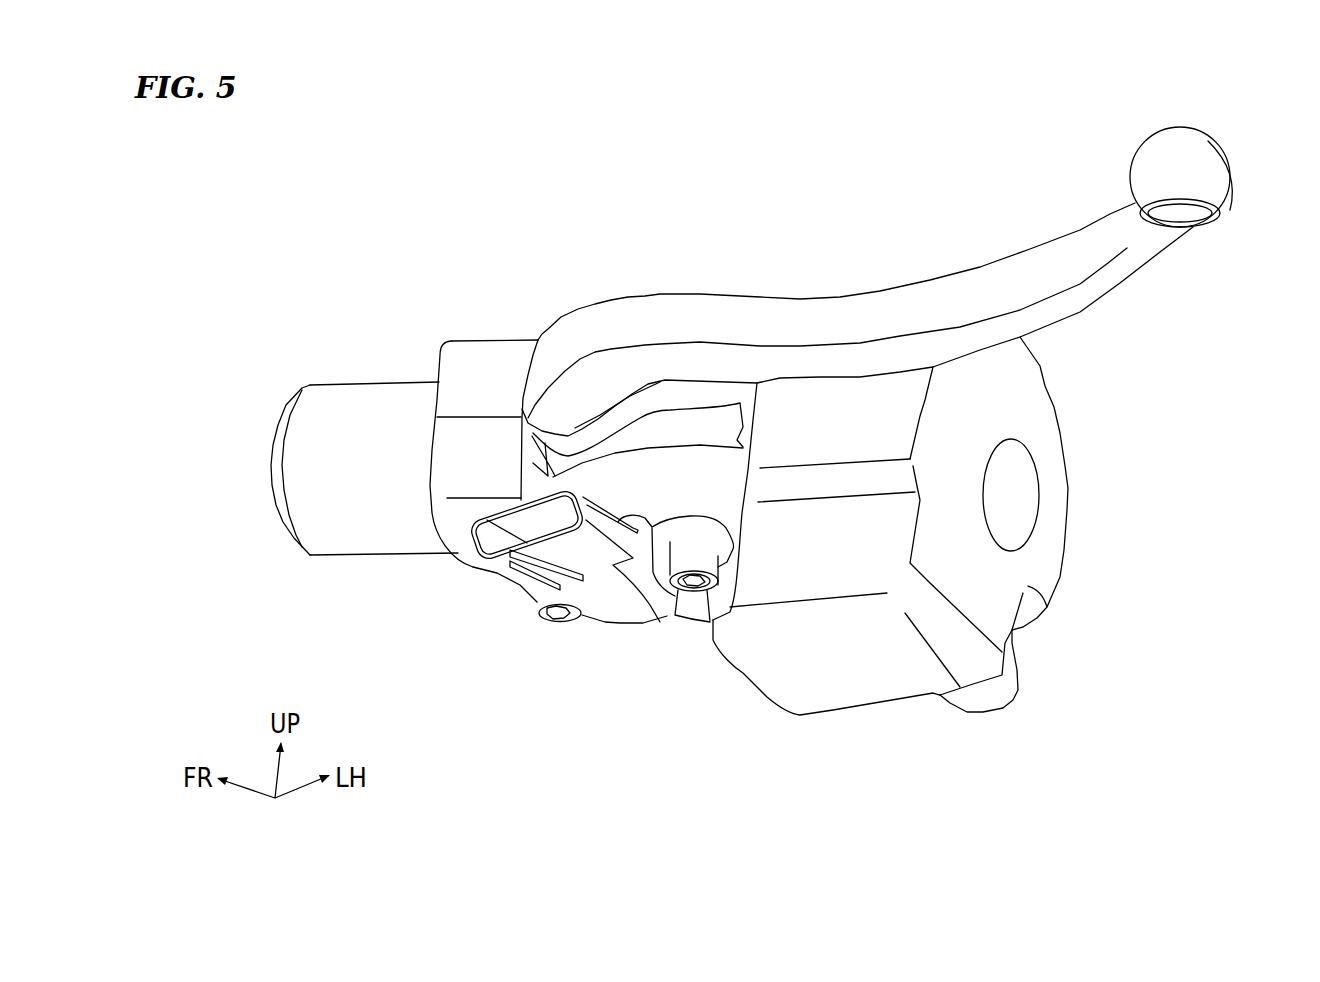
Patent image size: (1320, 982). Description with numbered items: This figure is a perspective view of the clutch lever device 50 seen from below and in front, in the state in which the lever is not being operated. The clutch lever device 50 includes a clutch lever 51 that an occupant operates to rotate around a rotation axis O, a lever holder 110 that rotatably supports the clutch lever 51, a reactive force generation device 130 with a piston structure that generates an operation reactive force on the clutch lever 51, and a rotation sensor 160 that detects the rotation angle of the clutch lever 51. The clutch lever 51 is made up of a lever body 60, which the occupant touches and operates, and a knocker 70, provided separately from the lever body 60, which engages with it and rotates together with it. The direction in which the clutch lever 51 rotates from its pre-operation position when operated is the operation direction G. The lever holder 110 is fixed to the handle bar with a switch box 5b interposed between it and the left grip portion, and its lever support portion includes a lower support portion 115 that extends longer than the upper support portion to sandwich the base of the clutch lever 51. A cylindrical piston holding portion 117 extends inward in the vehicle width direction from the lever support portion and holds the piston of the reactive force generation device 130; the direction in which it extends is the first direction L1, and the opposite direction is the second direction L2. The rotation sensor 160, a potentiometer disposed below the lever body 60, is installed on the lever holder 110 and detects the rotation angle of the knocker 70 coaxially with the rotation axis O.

The clutch lever device 50 is at (400, 211).
The clutch lever 51 is at (832, 294).
The lever body 60 is at (888, 307).
The knocker 70 is at (673, 393).
The lever holder 110 is at (498, 336).
The lower support portion 115 is at (727, 507).
The piston holding portion 117 is at (447, 513).
The reactive force generation device 130 is at (352, 556).
The rotation sensor 160 is at (538, 616).
The switch box 5b is at (1052, 507).
The rotation axis O is at (627, 600).
The operation direction G is at (1193, 257).
The first direction L1 is at (337, 357).
The second direction L2 is at (347, 357).